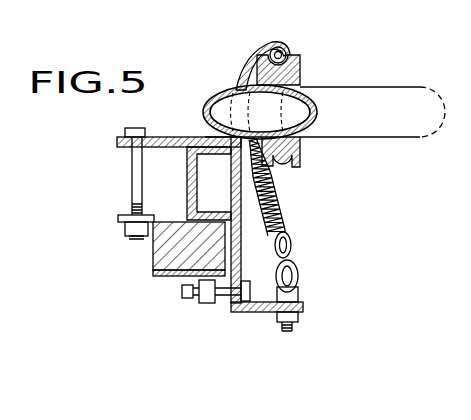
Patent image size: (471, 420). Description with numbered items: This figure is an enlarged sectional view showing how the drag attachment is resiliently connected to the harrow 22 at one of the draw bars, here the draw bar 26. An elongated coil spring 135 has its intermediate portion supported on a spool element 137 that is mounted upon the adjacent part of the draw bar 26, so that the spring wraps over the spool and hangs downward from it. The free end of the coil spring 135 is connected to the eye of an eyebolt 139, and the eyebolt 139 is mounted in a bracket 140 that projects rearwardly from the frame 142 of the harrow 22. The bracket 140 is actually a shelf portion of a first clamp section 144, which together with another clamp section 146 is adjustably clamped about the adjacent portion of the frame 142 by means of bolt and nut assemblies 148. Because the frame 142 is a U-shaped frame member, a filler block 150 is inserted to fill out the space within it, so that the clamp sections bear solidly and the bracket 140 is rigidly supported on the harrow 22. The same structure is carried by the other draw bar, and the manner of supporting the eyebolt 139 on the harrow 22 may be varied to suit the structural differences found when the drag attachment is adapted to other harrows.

The harrow 22 is at (152, 252).
The draw bar 26 is at (365, 87).
The coil spring 135 is at (272, 44).
The spool element 137 is at (296, 73).
The eyebolt 139 is at (298, 273).
The bracket 140 is at (265, 313).
The frame 142 is at (186, 200).
The first clamp section 144 is at (162, 137).
The clamp section 146 is at (155, 273).
The bolt and nut assemblies 148 is at (132, 189).
The filler block 150 is at (173, 268).